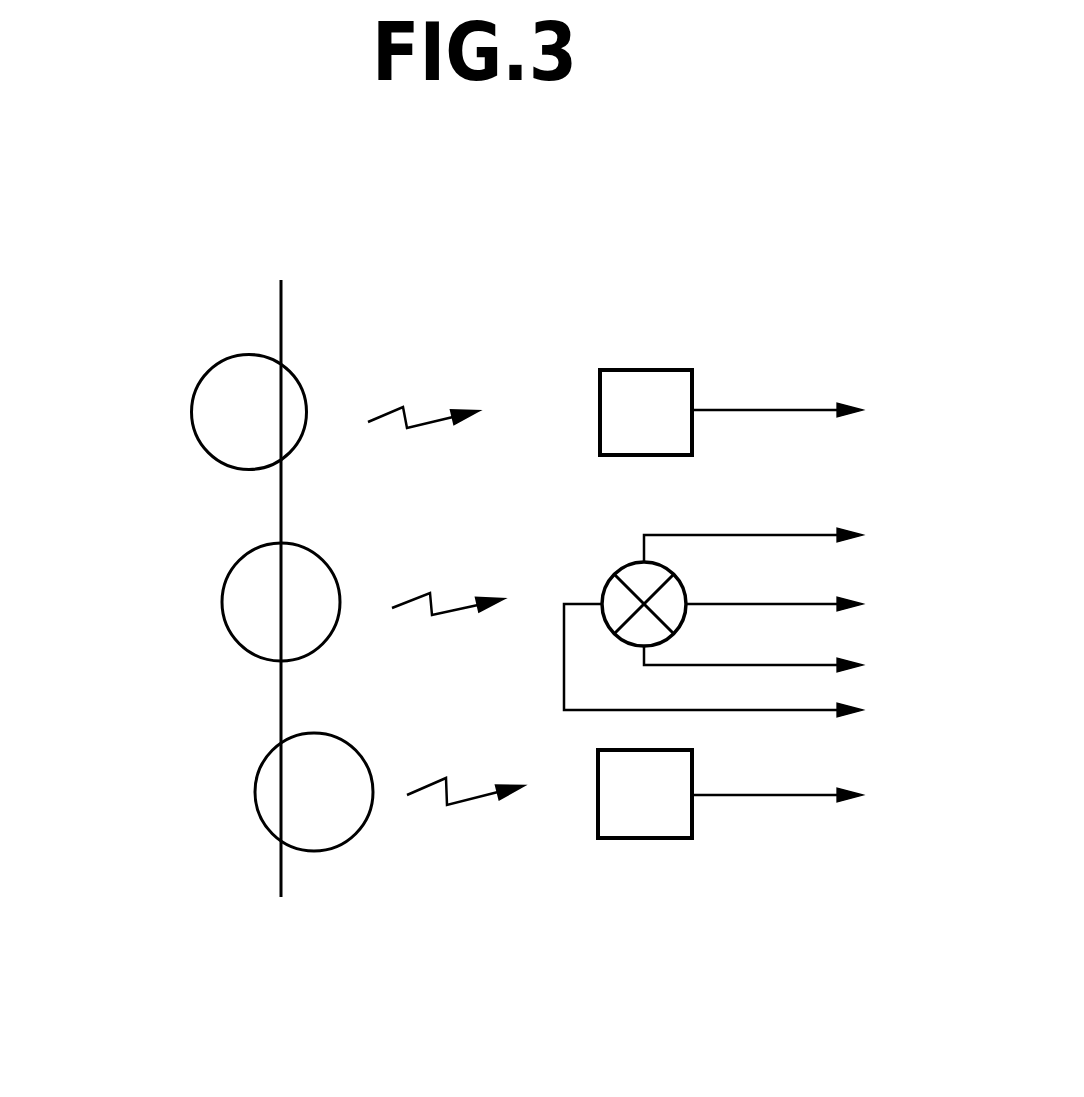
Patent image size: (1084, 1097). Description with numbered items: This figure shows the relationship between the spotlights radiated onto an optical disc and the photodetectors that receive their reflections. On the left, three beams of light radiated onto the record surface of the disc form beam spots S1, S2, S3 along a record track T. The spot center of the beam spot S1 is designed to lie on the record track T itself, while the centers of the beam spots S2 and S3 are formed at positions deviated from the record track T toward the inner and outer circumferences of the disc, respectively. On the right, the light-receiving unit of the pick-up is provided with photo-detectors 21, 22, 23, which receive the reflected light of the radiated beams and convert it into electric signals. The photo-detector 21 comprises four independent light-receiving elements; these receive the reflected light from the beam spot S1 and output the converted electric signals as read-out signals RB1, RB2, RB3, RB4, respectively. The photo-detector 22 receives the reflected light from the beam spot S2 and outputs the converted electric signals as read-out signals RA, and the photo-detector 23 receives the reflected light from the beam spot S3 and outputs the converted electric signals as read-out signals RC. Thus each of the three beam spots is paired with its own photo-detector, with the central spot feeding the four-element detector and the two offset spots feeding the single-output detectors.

The record track T is at (278, 873).
The beam spot S1 is at (225, 583).
The beam spot S2 is at (203, 377).
The beam spot S3 is at (255, 778).
The photo-detector 21 is at (612, 578).
The photo-detector 22 is at (663, 370).
The photo-detector 23 is at (628, 840).
The read-out signals RA is at (812, 414).
The read-out signal RB1 is at (797, 540).
The read-out signal RB2 is at (818, 604).
The read-out signal RB3 is at (797, 664).
The read-out signal RB4 is at (757, 667).
The read-out signals RC is at (811, 792).